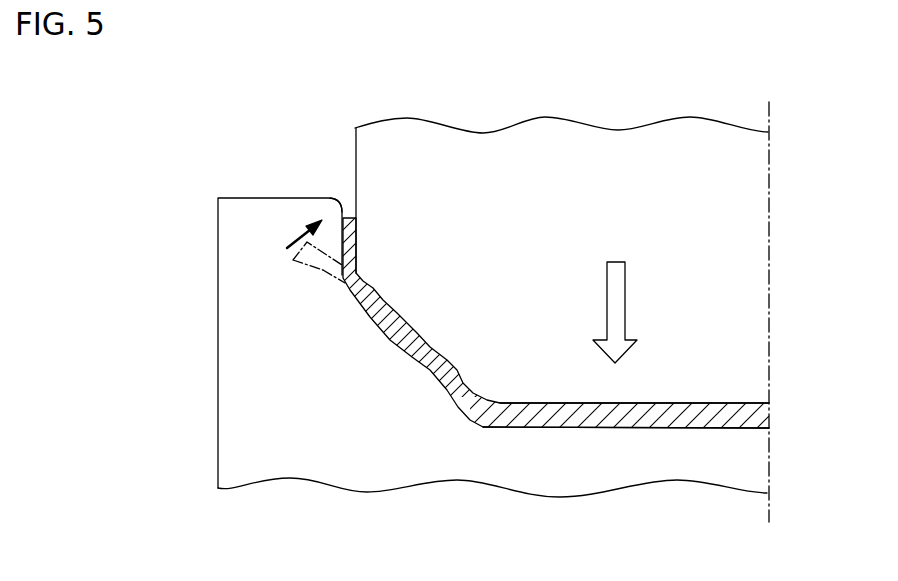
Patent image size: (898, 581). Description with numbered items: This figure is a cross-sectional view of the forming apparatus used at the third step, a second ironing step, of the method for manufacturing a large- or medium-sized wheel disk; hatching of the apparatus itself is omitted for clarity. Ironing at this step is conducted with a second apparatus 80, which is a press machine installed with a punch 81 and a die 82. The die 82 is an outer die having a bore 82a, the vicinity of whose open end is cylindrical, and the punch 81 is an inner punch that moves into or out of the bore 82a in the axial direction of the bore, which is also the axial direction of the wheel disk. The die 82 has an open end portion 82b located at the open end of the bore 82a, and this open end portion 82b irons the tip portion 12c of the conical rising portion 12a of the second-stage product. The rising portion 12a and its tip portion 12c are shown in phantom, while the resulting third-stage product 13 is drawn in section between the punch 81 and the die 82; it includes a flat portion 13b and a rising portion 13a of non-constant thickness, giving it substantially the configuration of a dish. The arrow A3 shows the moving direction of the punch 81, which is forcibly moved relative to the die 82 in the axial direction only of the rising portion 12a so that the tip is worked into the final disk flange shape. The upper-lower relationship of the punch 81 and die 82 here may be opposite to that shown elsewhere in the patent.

The second apparatus 80 is at (490, 113).
The punch 81 is at (632, 152).
The die 82 is at (253, 467).
The bore 82a is at (368, 312).
The open end portion 82b is at (342, 205).
The third-stage product 13 is at (458, 405).
The rising portion 13a is at (393, 343).
The flat portion 13b is at (632, 420).
The rising portion 12a is at (323, 270).
The tip portion 12c is at (293, 260).
The moving direction of the punch A3 is at (614, 297).